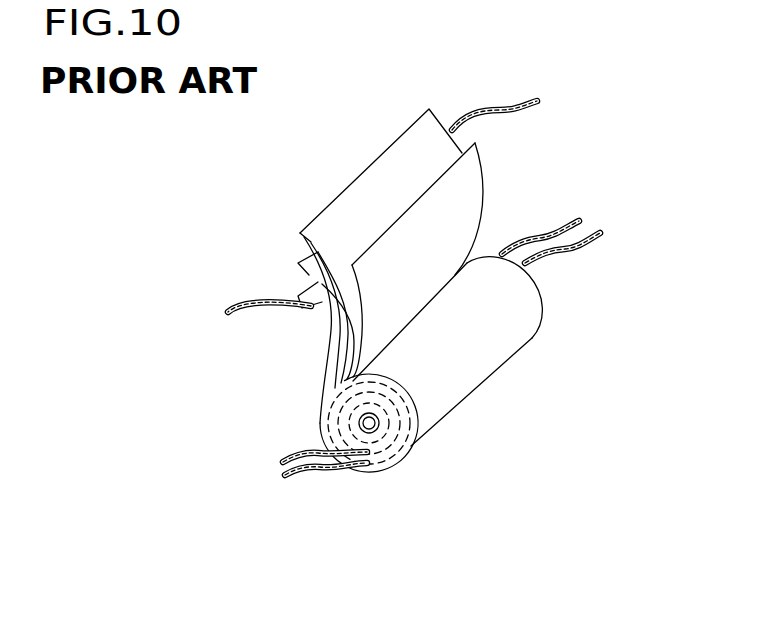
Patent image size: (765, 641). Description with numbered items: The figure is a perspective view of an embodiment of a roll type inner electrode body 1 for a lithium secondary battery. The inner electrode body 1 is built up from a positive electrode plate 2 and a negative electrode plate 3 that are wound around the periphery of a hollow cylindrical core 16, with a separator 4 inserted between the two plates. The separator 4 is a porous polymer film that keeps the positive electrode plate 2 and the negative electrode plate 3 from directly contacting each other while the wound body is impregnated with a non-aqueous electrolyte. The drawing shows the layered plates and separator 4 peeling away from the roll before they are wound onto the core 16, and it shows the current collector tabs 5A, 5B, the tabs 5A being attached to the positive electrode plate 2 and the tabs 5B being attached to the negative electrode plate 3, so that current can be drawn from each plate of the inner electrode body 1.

The inner electrode body 1 is at (505, 369).
The positive electrode plate 2 is at (328, 333).
The negative electrode plate 3 is at (368, 182).
The separator 4 is at (299, 262).
The current collector tab 5A is at (243, 298).
The current collector tab 5B is at (508, 116).
The hollow cylindrical core 16 is at (381, 428).